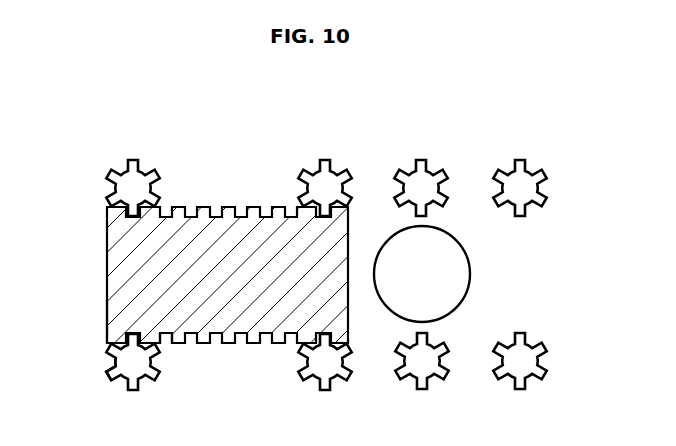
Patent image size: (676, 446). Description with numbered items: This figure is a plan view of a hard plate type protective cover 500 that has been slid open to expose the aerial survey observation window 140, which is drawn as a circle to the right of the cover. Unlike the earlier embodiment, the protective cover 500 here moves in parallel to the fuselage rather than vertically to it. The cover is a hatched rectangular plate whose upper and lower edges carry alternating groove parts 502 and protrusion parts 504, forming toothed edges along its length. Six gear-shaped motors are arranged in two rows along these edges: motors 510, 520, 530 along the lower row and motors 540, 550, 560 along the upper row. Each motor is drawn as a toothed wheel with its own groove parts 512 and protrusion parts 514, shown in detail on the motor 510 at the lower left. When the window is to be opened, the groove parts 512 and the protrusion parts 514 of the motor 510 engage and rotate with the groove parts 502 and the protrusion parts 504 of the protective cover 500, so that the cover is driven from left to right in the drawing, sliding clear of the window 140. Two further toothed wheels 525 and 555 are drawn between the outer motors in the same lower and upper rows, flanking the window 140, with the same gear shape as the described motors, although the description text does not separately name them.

The aerial survey observation window 140 is at (448, 278).
The protective cover 500 is at (110, 247).
The groove parts 502 is at (108, 323).
The protrusion parts 504 is at (167, 346).
The motor 510 is at (128, 368).
The groove parts 512 is at (108, 373).
The protrusion parts 514 is at (112, 360).
The motor 520 is at (333, 368).
The third gear 525 is at (430, 368).
The motor 530 is at (527, 368).
The motor 540 is at (146, 180).
The motor 550 is at (340, 181).
The seventh gear 555 is at (434, 181).
The motor 560 is at (532, 181).